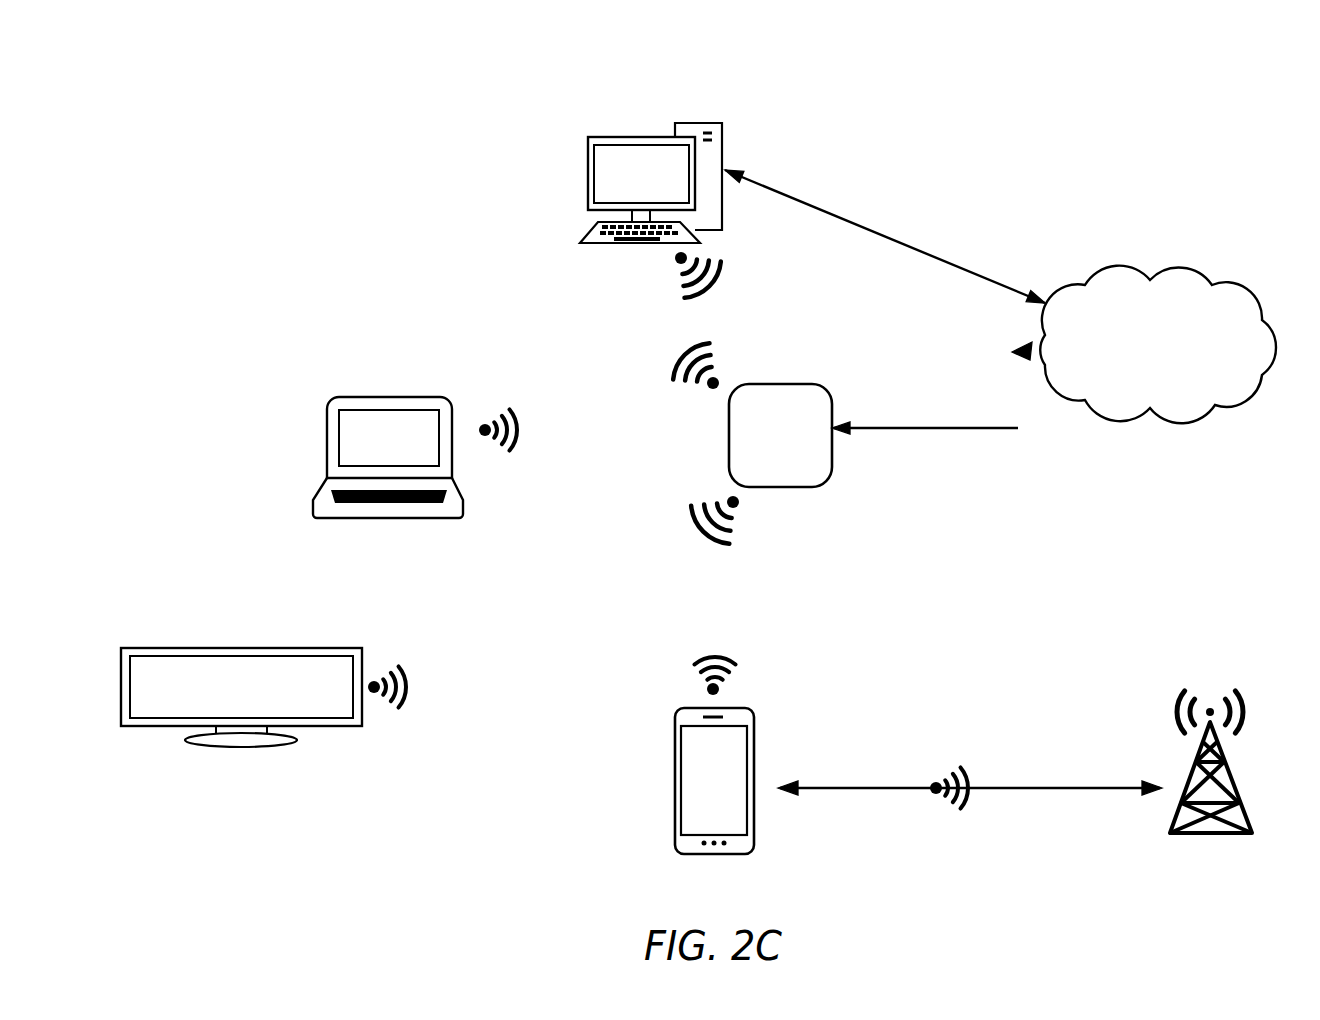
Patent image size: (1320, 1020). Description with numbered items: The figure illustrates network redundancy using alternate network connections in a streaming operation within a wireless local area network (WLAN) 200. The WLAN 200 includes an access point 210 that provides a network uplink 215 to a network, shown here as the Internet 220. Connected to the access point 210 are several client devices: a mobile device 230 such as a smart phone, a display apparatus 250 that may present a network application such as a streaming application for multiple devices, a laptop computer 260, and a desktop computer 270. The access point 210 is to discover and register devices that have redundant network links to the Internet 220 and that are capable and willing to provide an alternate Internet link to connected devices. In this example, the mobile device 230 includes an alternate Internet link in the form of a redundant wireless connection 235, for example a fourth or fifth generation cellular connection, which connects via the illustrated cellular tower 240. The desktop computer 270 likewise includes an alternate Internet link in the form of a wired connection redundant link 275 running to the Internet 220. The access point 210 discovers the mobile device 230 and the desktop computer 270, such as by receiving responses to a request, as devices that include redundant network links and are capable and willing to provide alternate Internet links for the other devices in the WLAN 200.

The wireless local area network (WLAN) 200 is at (132, 98).
The access point 210 is at (749, 444).
The network uplink 215 is at (932, 414).
The Internet 220 is at (1158, 345).
The mobile device 230 is at (670, 712).
The redundant wireless connection 235 is at (970, 714).
The cellular tower 240 is at (1192, 687).
The display apparatus 250 is at (192, 648).
The laptop computer 260 is at (372, 390).
The desktop computer 270 is at (637, 130).
The wired connection redundant link 275 is at (886, 223).